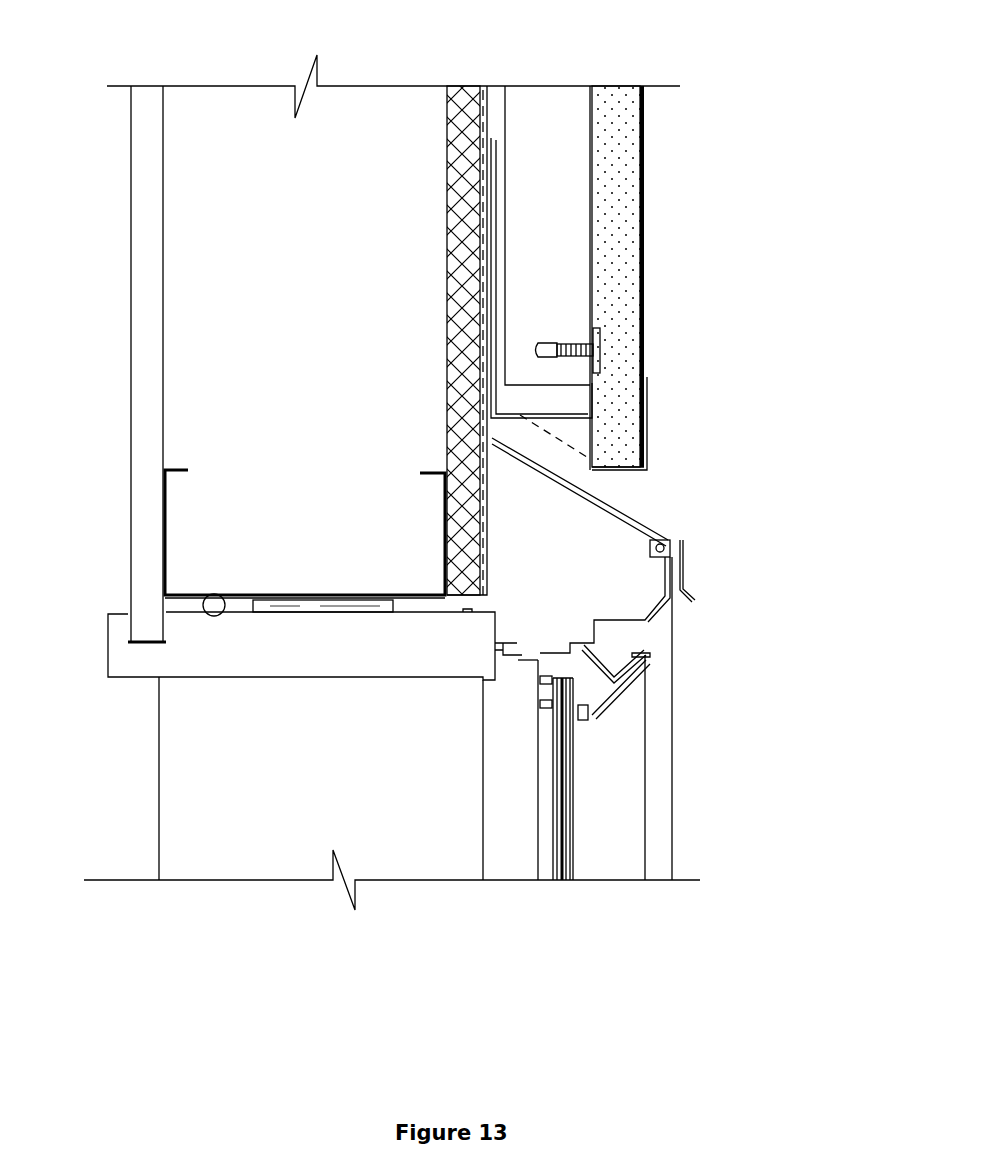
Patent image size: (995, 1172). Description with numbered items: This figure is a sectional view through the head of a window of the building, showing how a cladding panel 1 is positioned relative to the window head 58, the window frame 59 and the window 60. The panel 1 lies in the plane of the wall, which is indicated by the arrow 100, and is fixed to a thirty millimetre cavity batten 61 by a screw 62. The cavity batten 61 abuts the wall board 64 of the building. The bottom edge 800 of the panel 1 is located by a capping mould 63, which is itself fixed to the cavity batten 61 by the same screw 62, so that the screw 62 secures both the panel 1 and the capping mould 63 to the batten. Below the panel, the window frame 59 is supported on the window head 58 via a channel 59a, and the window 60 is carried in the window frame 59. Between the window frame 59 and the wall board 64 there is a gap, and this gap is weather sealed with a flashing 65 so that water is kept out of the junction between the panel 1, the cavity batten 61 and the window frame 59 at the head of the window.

The panel 1 is at (660, 108).
The window head 58 is at (122, 657).
The window frame 59 is at (657, 607).
The channel 59a is at (494, 626).
The window 60 is at (563, 880).
The cavity batten 61 is at (538, 242).
The screw 62 is at (600, 345).
The capping mould 63 is at (647, 405).
The wall board 64 is at (461, 97).
The flashing 65 is at (685, 542).
The plane of the wall 100 is at (375, 554).
The bottom edge of the panel 800 is at (650, 462).